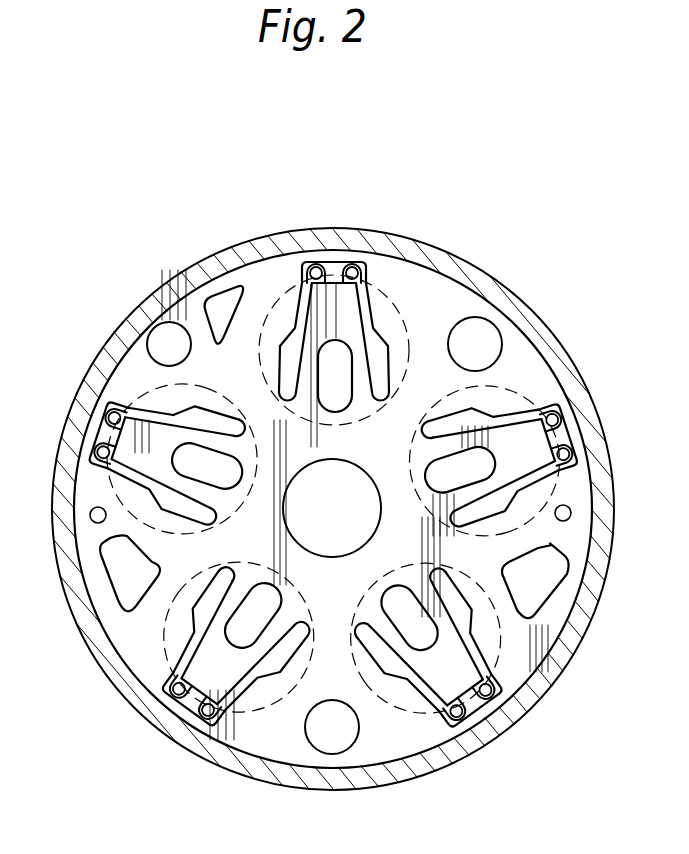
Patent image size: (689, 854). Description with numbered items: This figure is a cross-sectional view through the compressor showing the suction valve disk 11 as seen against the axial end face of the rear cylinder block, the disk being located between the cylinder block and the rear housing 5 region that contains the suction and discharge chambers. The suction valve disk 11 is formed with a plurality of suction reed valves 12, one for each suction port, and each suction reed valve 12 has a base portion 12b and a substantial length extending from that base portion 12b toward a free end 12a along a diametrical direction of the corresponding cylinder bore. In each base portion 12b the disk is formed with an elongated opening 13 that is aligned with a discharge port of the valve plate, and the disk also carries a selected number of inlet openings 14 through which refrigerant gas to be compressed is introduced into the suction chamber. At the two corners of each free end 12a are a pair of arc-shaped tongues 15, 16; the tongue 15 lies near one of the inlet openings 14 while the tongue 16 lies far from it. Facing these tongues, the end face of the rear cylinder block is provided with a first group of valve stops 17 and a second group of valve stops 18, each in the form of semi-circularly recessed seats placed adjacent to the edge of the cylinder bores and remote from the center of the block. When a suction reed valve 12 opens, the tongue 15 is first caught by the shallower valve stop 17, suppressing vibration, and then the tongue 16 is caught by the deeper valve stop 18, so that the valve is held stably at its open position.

The clutch plate 5 is at (313, 790).
The suction valve disk 11 is at (462, 285).
The suction reed valve 12 is at (354, 327).
The free end 12a is at (337, 282).
The base portion 12b is at (404, 400).
The elongated opening 13 is at (336, 413).
The inlet opening 14 is at (229, 345).
The arc-shaped tongue 15 is at (317, 268).
The arc-shaped tongue 16 is at (357, 266).
The valve stop 17 is at (304, 276).
The valve stop 18 is at (364, 276).